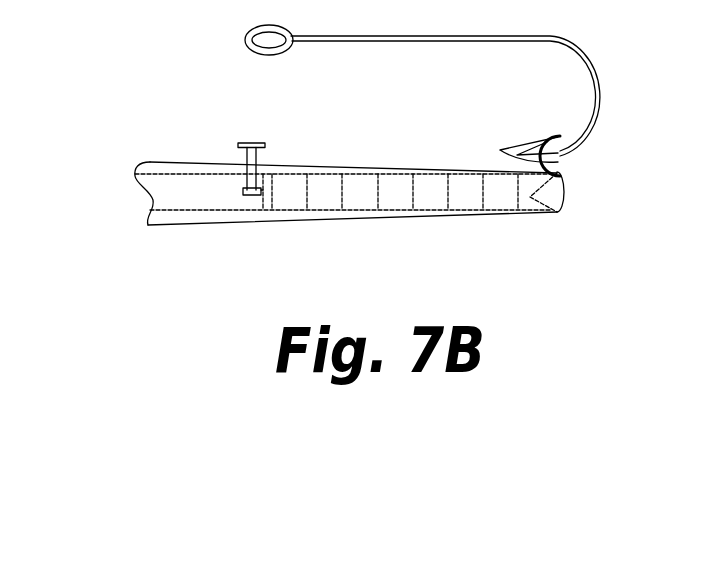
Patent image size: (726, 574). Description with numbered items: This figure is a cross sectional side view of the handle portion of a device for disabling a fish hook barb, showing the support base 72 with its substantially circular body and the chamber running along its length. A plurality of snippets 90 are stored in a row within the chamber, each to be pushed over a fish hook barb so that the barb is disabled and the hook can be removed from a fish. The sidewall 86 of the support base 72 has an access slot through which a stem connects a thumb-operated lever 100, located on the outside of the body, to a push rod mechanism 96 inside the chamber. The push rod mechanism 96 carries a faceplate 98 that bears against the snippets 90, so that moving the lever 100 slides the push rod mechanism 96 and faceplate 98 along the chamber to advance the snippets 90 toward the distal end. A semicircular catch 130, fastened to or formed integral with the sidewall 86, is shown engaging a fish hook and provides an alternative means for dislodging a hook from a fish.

The support base 72 is at (200, 161).
The sidewall 86 is at (295, 162).
The snippets 90 is at (470, 180).
The push rod mechanism 96 is at (256, 197).
The faceplate 98 is at (266, 198).
The lever 100 is at (250, 143).
The semicircular catch 130 is at (545, 147).